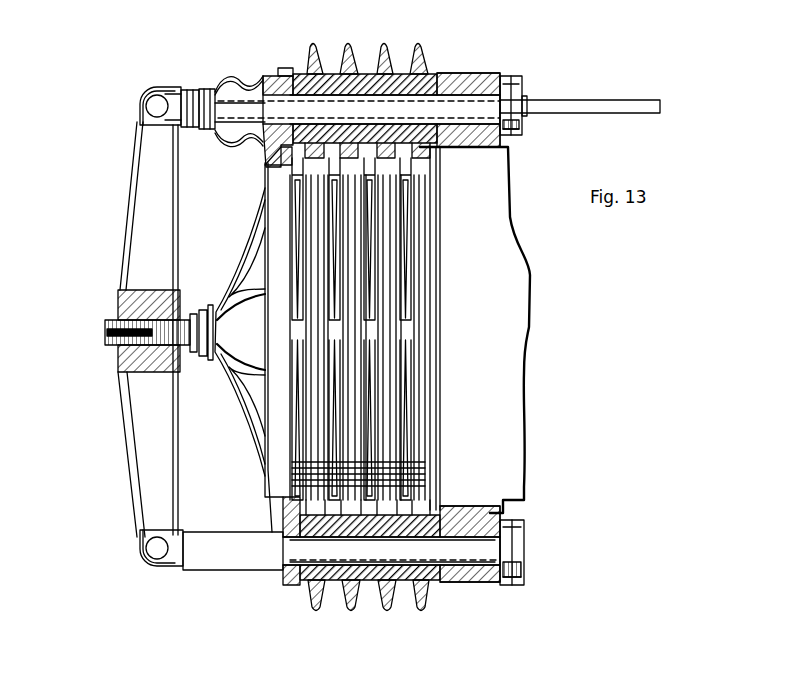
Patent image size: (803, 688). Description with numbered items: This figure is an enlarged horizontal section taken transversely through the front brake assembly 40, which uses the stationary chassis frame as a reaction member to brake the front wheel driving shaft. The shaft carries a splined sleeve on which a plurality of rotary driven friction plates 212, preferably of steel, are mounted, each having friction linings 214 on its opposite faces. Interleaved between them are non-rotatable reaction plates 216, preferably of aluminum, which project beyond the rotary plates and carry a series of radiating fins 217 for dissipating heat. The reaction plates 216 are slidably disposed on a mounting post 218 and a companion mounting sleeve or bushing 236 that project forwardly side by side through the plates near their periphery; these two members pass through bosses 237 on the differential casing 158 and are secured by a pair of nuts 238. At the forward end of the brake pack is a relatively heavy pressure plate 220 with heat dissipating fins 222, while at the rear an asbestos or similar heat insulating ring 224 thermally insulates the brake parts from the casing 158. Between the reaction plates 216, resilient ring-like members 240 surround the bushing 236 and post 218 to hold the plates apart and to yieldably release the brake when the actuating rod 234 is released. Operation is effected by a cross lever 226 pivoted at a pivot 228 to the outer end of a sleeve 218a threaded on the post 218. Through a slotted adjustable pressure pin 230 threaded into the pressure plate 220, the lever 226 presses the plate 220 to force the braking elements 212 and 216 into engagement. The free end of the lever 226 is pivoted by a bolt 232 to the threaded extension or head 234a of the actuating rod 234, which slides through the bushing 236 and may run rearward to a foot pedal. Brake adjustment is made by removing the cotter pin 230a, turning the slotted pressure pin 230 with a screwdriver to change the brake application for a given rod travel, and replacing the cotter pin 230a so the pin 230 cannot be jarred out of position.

The brake assembly 40 is at (281, 56).
The differential casing 158 is at (522, 465).
The rotary driven friction plates 212 is at (405, 367).
The friction linings 214 is at (410, 334).
The non-rotatable reaction plates 216 is at (418, 274).
The radiating fins 217 is at (428, 66).
The mounting post 218 is at (462, 556).
The sleeve 218a is at (212, 560).
The pressure plate 220 is at (277, 480).
The heat dissipating fins 222 is at (245, 416).
The heat insulating ring 224 is at (437, 409).
The cross lever 226 is at (129, 240).
The pivot 228 is at (150, 548).
The pressure pin 230 is at (118, 341).
The cotter pin 230a is at (140, 338).
The bolt 232 is at (158, 99).
The actuating rod 234 is at (639, 100).
The threaded extension or head 234a is at (197, 101).
The mounting sleeve or bushing 236 is at (485, 84).
The bosses 237 is at (478, 95).
The nuts 238 is at (526, 103).
The resilient ring-like members 240 is at (368, 68).